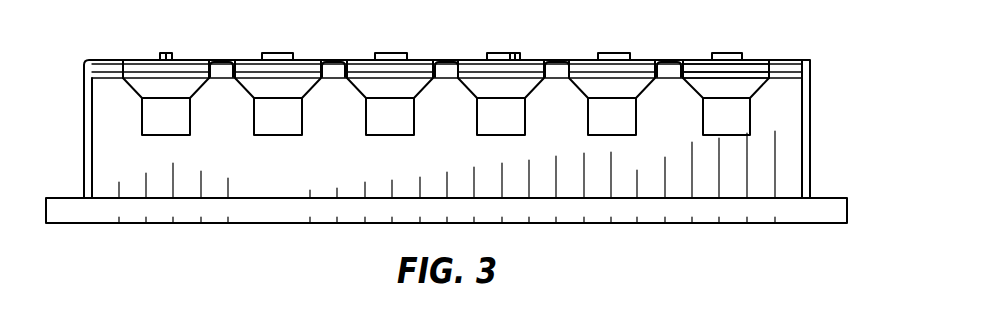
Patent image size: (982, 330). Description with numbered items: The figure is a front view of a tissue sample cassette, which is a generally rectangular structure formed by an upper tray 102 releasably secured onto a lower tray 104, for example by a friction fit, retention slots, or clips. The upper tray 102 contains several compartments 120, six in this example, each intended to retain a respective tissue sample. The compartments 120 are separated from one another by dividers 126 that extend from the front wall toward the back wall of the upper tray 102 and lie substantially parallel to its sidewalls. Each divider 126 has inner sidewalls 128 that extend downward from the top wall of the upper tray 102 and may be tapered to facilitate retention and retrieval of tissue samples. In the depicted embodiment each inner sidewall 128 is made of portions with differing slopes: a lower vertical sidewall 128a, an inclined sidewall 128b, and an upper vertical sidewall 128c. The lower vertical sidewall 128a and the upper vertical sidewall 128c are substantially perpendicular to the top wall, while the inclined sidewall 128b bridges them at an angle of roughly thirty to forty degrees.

The upper tray 102 is at (811, 175).
The lower tray 104 is at (848, 212).
The compartments 120 is at (182, 63).
The dividers 126 is at (335, 65).
The inner sidewalls 128 is at (742, 90).
The lower vertical sidewall 128a is at (703, 116).
The inclined sidewall 128b is at (683, 78).
The upper vertical sidewall 128c is at (683, 72).